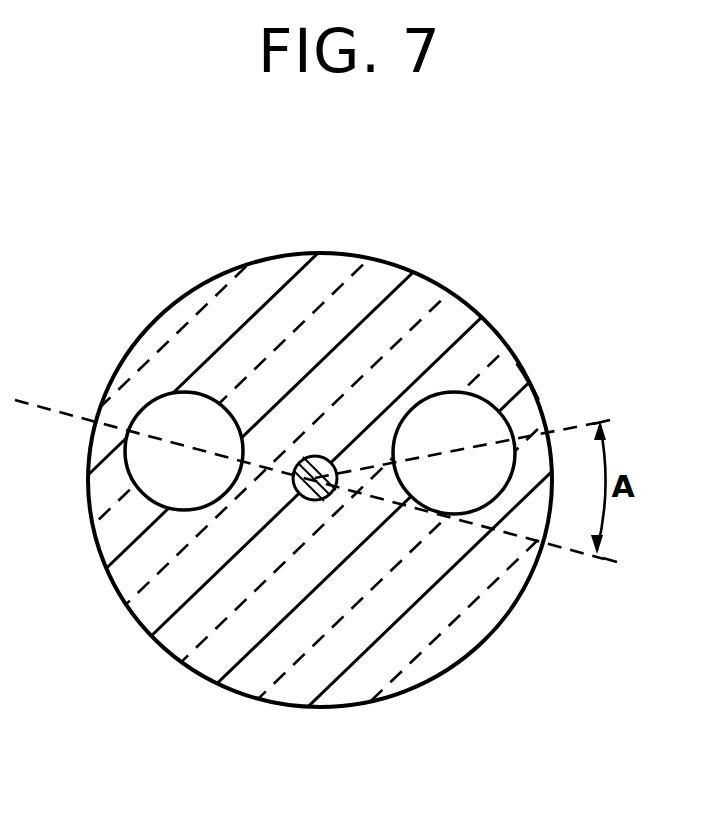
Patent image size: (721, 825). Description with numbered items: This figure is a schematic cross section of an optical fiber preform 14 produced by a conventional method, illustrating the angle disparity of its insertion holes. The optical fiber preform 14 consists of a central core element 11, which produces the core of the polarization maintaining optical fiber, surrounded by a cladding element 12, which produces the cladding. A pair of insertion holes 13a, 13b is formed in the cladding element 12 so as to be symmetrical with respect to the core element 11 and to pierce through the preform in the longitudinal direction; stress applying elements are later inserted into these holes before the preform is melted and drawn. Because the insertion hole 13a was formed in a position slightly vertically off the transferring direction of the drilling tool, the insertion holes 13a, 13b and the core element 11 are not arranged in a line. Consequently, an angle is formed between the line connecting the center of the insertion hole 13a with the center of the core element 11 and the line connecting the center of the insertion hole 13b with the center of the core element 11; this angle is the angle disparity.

The core element 11 is at (316, 500).
The cladding element 12 is at (460, 303).
The insertion hole 13a is at (164, 398).
The insertion hole 13b is at (507, 423).
The optical fiber preform 14 is at (517, 363).